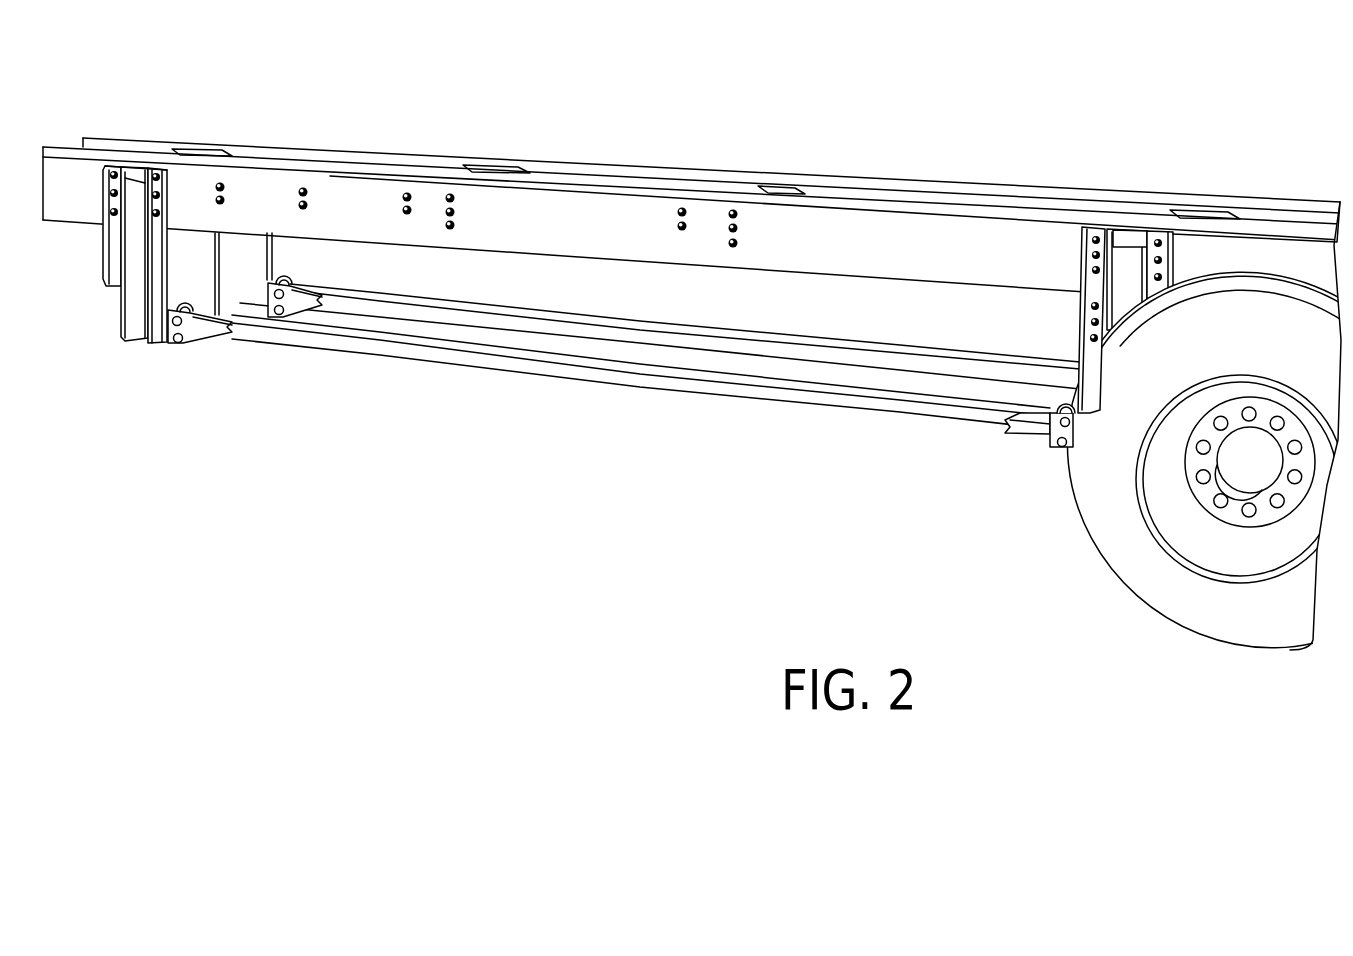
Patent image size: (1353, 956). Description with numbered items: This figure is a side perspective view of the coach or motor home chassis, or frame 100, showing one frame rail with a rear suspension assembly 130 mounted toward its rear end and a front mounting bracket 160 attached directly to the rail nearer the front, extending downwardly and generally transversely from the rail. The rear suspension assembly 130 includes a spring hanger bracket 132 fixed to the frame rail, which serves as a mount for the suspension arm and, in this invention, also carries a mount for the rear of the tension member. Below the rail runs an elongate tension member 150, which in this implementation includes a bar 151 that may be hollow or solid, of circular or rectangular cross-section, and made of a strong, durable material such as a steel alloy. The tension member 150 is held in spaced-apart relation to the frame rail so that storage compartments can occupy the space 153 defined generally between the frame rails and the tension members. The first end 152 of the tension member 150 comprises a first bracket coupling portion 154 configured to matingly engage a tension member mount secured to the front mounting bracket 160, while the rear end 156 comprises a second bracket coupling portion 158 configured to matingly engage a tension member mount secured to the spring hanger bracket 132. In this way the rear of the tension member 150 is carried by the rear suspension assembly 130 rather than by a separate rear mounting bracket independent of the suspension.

The frame 100 is at (866, 513).
The rear suspension assembly 130 is at (1062, 355).
The spring hanger bracket 132 is at (1080, 270).
The tension member 150 is at (615, 402).
The bar 151 is at (752, 397).
The first end 152 is at (194, 308).
The space 153 is at (392, 275).
The first bracket coupling portion 154 is at (205, 327).
The rear end 156 is at (1030, 410).
The second bracket coupling portion 158 is at (1026, 432).
The front mounting bracket 160 is at (148, 277).